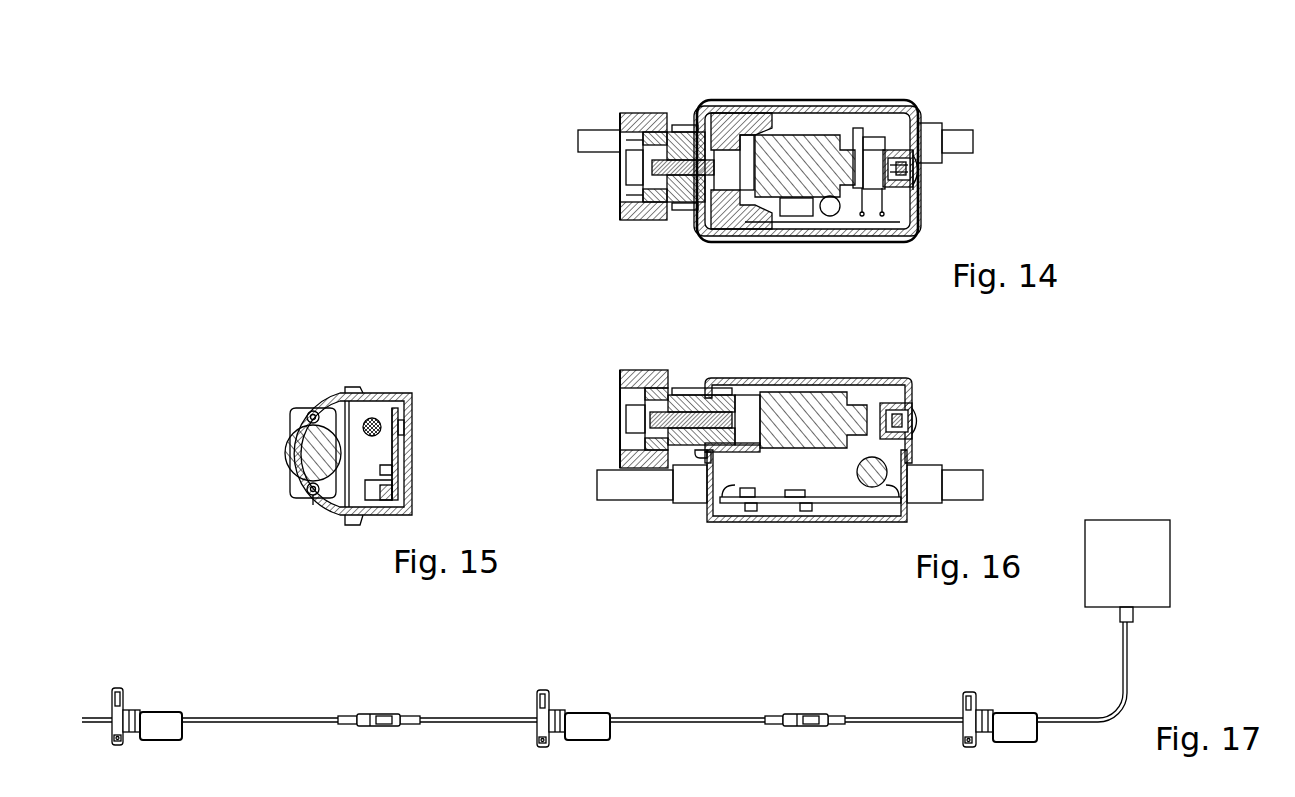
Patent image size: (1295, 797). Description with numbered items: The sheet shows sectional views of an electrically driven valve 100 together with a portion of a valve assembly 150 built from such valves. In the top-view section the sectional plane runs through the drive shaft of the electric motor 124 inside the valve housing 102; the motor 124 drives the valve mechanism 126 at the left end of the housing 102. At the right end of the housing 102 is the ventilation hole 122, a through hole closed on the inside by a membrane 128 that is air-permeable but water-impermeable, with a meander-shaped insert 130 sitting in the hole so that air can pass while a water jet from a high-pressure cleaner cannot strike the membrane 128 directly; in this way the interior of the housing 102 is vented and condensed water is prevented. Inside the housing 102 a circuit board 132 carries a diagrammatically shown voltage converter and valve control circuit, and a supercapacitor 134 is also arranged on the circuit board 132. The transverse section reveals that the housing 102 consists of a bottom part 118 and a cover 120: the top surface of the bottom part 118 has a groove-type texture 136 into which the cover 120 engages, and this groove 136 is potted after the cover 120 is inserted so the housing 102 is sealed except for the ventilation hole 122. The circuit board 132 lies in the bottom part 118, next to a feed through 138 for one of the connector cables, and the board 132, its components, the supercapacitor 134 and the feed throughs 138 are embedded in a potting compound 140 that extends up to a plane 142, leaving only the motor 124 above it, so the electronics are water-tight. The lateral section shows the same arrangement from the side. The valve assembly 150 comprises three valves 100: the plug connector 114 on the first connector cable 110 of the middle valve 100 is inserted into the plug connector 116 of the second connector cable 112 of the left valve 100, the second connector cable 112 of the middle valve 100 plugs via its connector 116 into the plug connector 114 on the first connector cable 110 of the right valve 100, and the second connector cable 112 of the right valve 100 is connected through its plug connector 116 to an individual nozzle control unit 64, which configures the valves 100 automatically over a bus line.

In FIG. 17, the individual nozzle control unit 64 is at (1139, 573).
In FIG. 14, the valve 100 is at (862, 88).
In FIG. 17, the valve 100 is at (167, 718).
In FIG. 14, the valve housing 102 is at (914, 100).
In FIG. 16, the valve housing 102 is at (908, 376).
In FIG. 15, the valve housing 102 is at (381, 383).
In FIG. 17, the first connector cable 110 is at (462, 718).
In FIG. 17, the second connector cable 112 is at (240, 718).
In FIG. 17, the plug connector 114 is at (405, 716).
In FIG. 17, the plug connector 116 is at (345, 716).
In FIG. 16, the bottom part 118 is at (828, 522).
In FIG. 15, the bottom part 118 is at (410, 418).
In FIG. 16, the cover 120 is at (752, 378).
In FIG. 15, the cover 120 is at (302, 398).
In FIG. 14, the ventilation hole 122 is at (925, 165).
In FIG. 16, the ventilation hole 122 is at (925, 418).
In FIG. 14, the electric motor 124 is at (805, 130).
In FIG. 16, the electric motor 124 is at (813, 420).
In FIG. 15, the electric motor 124 is at (300, 460).
In FIG. 14, the valve mechanism 126 is at (666, 108).
In FIG. 14, the membrane 128 is at (877, 192).
In FIG. 14, the insert 130 is at (918, 180).
In FIG. 14, the circuit board 132 is at (845, 212).
In FIG. 15, the circuit board 132 is at (393, 440).
In FIG. 14, the supercapacitor 134 is at (862, 182).
In FIG. 16, the supercapacitor 134 is at (875, 478).
In FIG. 15, the groove-type texture 136 is at (349, 383).
In FIG. 15, the feed through 138 is at (374, 425).
In FIG. 15, the potting compound 140 is at (355, 488).
In FIG. 15, the plane 142 is at (346, 420).
In FIG. 17, the valve assembly 150 is at (711, 700).